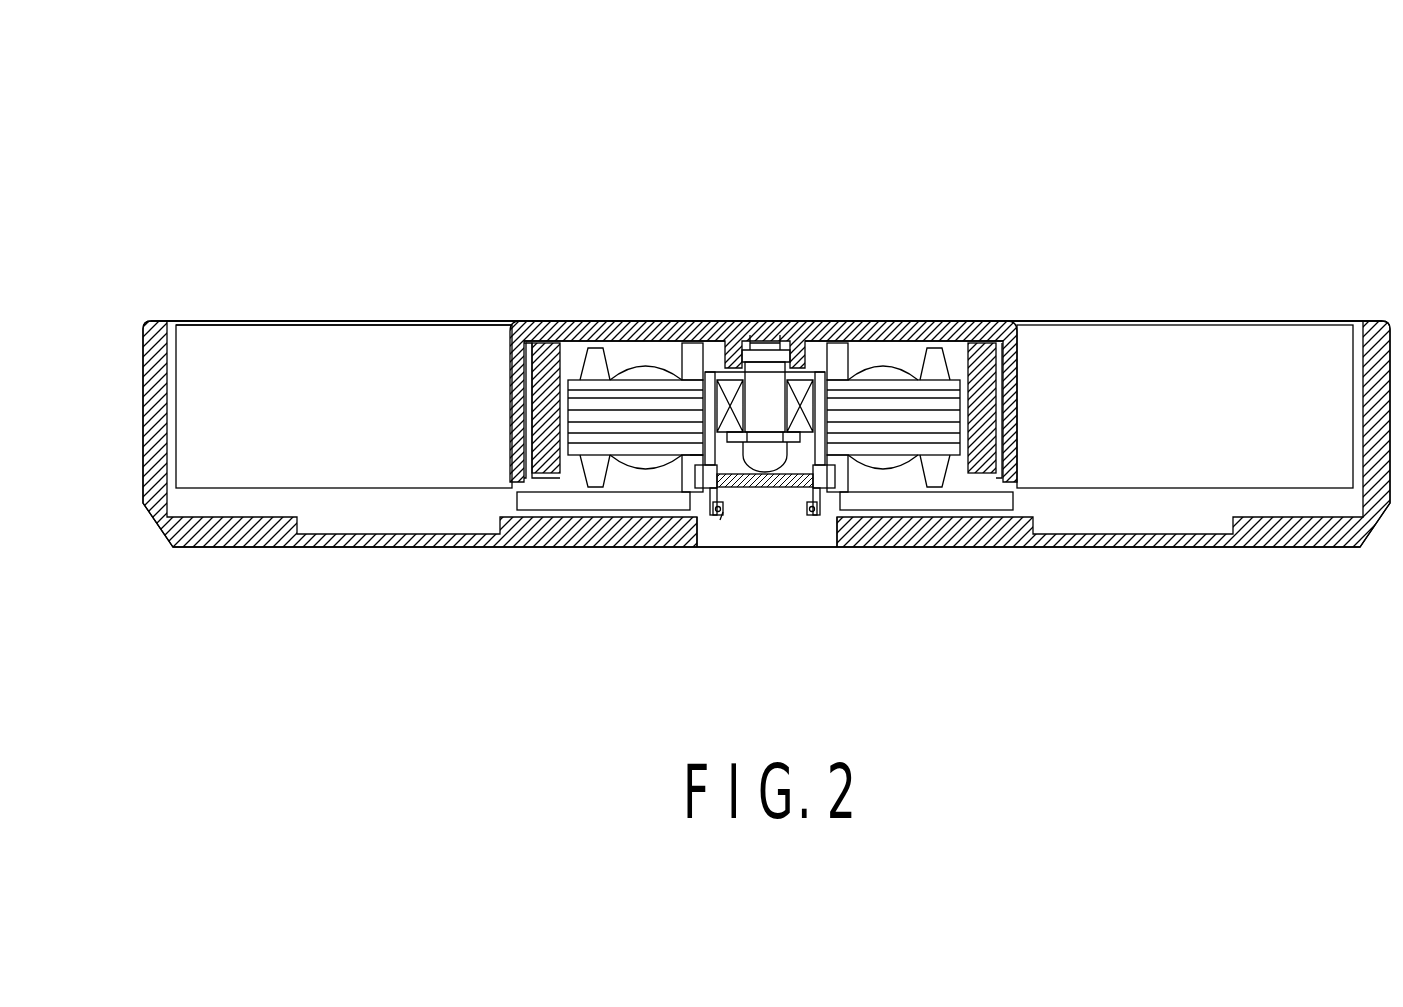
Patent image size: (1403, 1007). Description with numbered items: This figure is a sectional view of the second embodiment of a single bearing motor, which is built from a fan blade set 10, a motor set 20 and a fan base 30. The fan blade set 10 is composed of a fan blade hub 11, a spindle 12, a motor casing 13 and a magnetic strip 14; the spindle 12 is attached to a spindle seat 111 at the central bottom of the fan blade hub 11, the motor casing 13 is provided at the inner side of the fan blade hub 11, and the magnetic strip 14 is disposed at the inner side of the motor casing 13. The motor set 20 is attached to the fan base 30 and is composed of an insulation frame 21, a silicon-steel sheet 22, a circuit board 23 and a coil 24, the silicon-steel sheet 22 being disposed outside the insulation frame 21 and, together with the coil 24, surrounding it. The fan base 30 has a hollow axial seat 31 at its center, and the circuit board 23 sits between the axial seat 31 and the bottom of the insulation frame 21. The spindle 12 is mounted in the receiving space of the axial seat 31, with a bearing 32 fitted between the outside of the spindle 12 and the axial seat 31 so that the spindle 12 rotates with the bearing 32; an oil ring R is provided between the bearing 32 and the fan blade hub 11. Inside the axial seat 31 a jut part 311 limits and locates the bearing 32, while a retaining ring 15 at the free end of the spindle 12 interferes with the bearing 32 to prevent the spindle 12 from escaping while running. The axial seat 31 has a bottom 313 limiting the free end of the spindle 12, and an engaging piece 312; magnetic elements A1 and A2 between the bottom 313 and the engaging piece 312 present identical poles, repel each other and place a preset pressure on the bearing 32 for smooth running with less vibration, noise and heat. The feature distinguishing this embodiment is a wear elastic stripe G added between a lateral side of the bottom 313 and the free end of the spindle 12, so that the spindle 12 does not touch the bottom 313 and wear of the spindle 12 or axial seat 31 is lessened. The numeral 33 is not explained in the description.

The fan blade set 10 is at (1015, 308).
The fan blade hub 11 is at (1018, 393).
The spindle 12 is at (775, 340).
The motor casing 13 is at (373, 321).
The magnetic strip 14 is at (493, 321).
The retaining ring 15 is at (822, 450).
The motor set 20 is at (580, 477).
The insulation frame 21 is at (958, 320).
The silicon-steel sheet 22 is at (877, 403).
The circuit board 23 is at (583, 503).
The coil 24 is at (640, 363).
The fan base 30 is at (1018, 553).
The axial seat 31 is at (880, 520).
The bearing 32 is at (683, 343).
The bearing seat 33 is at (785, 520).
The spindle seat 111 is at (745, 340).
The jut part 311 is at (822, 405).
The engaging piece 312 is at (708, 485).
The bottom 313 is at (837, 487).
The oil ring R is at (800, 345).
The wear elastic stripe G is at (517, 378).
The magnetic element A1 is at (723, 512).
The magnetic element A2 is at (700, 462).